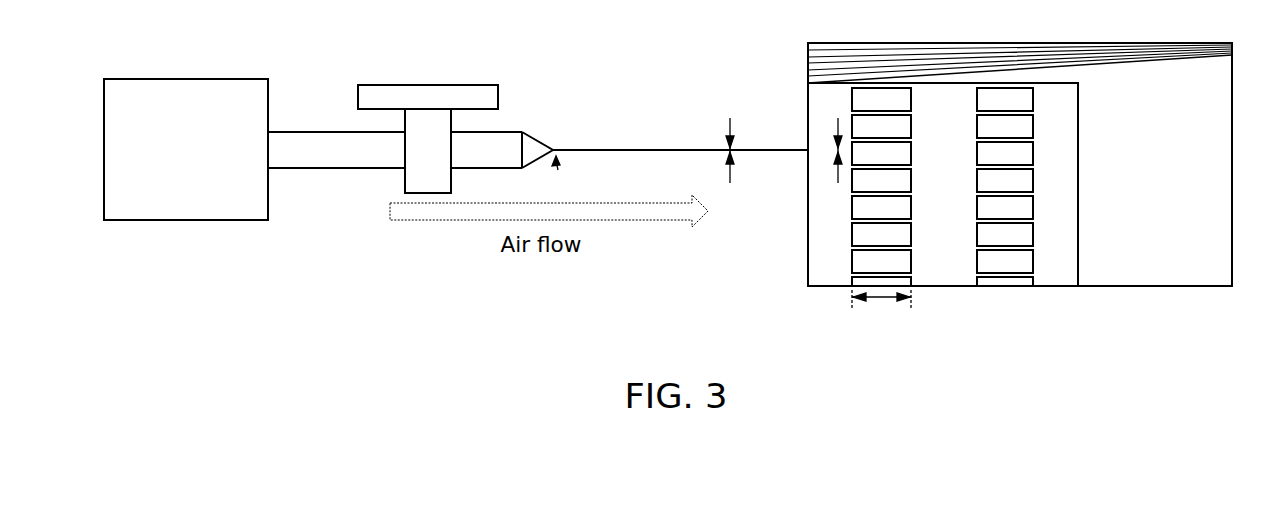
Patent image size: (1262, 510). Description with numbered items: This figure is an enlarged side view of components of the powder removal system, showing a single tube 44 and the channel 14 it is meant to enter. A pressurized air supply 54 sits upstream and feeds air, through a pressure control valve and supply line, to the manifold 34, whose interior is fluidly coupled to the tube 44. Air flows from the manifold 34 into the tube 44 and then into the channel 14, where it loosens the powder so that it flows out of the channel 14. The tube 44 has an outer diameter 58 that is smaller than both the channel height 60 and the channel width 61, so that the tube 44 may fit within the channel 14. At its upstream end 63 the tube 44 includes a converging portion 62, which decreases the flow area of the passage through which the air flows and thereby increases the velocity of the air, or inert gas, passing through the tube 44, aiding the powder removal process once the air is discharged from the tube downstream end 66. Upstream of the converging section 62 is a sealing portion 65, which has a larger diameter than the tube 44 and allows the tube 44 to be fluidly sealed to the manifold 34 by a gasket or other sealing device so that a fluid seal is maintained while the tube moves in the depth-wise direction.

The channel 14 is at (1020, 144).
The manifold 34 is at (432, 117).
The tube 44 is at (630, 147).
The pressurized air supply 54 is at (187, 78).
The outer diameter 58 is at (729, 121).
The channel height 60 is at (836, 122).
The channel width 61 is at (885, 301).
The converging portion 62 is at (548, 135).
The upstream end 63 is at (558, 170).
The sealing portion 65 is at (512, 131).
The tube downstream end 66 is at (912, 148).